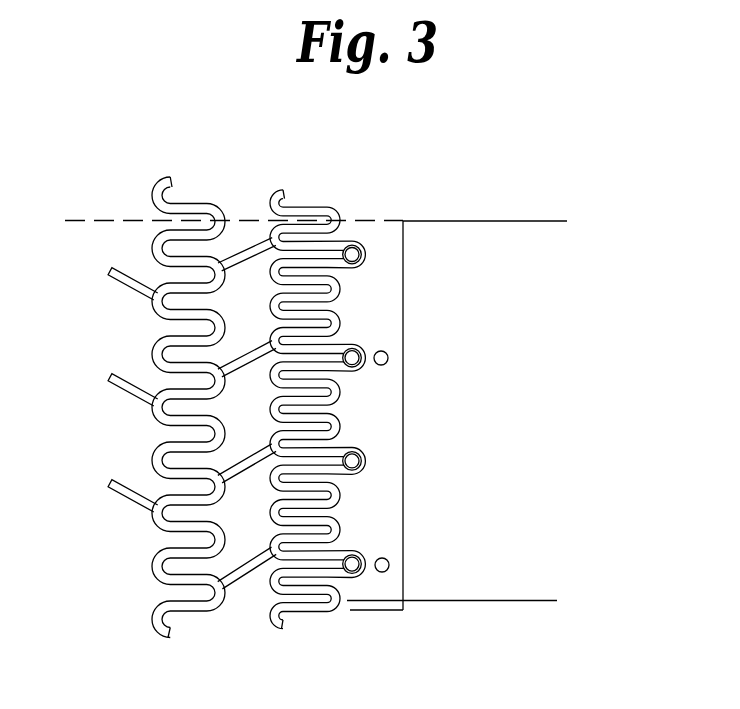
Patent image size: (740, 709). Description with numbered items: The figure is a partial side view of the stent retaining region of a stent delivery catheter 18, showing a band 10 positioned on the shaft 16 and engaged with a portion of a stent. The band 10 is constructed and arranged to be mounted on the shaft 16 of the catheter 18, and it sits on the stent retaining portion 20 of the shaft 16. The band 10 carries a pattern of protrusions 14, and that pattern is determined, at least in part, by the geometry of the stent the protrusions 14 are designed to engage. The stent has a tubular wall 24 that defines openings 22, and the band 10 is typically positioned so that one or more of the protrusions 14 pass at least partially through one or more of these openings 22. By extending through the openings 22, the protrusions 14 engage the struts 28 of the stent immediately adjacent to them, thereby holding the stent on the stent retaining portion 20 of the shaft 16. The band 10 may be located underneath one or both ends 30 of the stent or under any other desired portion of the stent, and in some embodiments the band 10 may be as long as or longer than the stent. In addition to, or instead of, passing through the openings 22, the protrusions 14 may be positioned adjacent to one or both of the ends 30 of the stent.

The band 10 is at (412, 257).
The protrusions 14 is at (360, 255).
The shaft 16 is at (552, 221).
The catheter 18 is at (490, 608).
The stent retaining portion 20 is at (240, 226).
The openings 22 is at (367, 460).
The tubular wall 24 is at (307, 206).
The struts 28 is at (346, 345).
The ends 30 is at (356, 236).